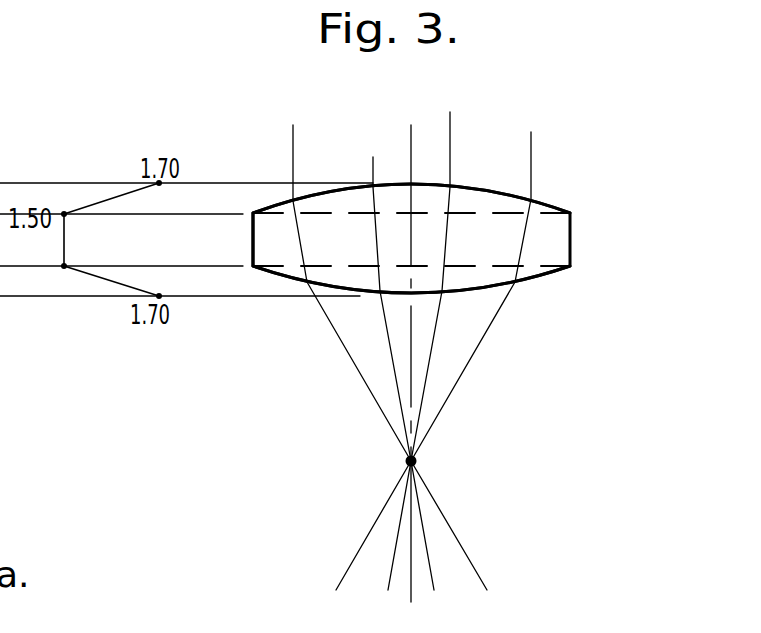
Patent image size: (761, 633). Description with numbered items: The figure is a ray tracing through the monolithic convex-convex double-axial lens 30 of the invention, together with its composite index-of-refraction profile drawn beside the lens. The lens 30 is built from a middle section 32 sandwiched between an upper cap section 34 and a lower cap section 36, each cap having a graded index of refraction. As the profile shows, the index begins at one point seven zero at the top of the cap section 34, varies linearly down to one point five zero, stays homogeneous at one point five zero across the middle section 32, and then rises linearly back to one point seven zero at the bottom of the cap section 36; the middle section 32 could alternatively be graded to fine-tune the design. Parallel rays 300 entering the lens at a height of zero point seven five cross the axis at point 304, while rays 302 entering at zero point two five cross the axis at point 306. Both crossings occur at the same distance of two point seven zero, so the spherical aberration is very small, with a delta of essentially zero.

The monolithic double-axial lens 30 is at (523, 322).
The middle section 32 is at (263, 241).
The cap section 34 is at (352, 205).
The cap section 36 is at (358, 282).
The rays 300 is at (448, 152).
The rays 302 is at (292, 165).
The point 304 is at (408, 461).
The point 306 is at (414, 461).